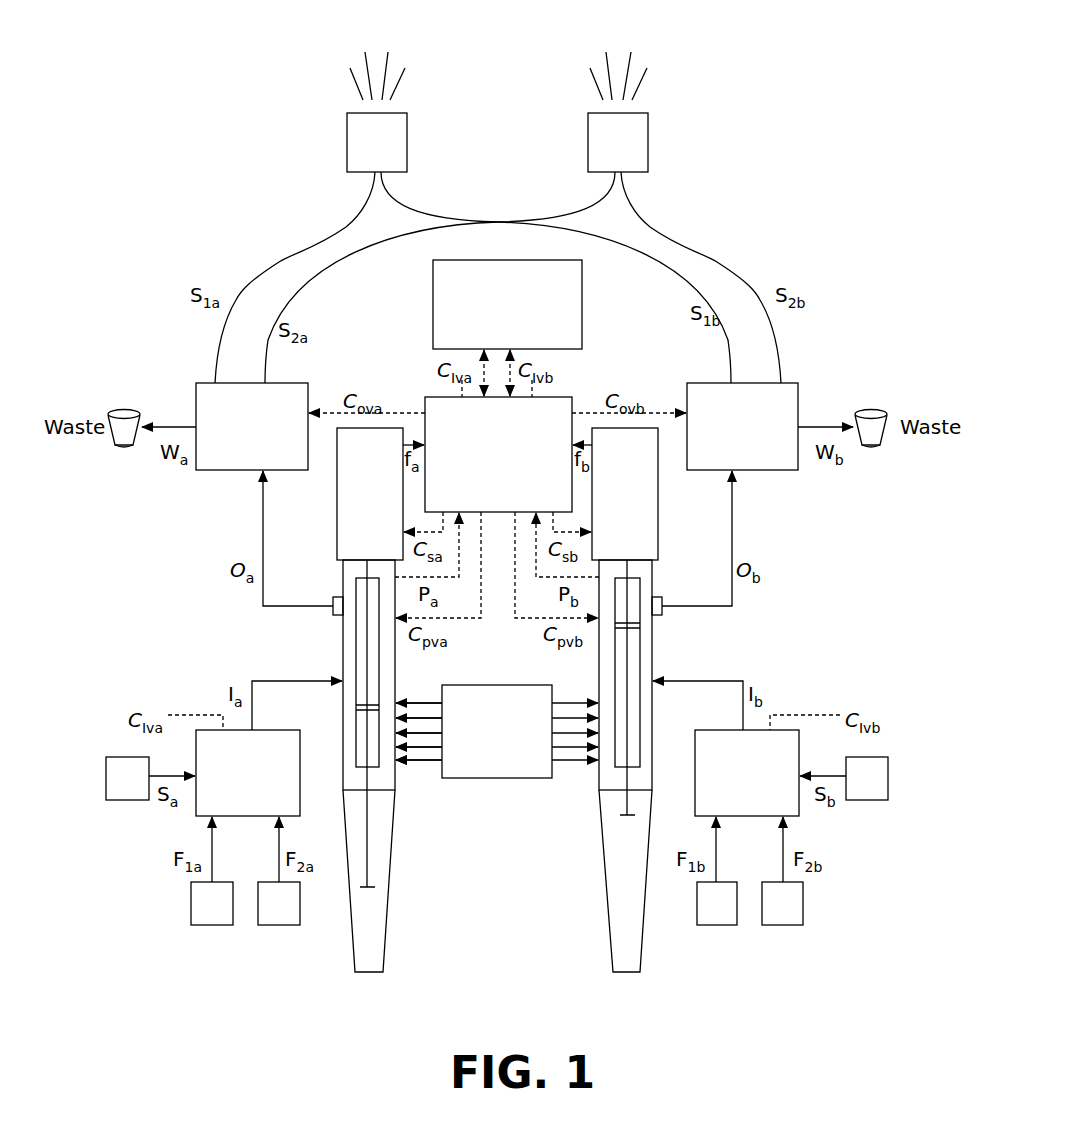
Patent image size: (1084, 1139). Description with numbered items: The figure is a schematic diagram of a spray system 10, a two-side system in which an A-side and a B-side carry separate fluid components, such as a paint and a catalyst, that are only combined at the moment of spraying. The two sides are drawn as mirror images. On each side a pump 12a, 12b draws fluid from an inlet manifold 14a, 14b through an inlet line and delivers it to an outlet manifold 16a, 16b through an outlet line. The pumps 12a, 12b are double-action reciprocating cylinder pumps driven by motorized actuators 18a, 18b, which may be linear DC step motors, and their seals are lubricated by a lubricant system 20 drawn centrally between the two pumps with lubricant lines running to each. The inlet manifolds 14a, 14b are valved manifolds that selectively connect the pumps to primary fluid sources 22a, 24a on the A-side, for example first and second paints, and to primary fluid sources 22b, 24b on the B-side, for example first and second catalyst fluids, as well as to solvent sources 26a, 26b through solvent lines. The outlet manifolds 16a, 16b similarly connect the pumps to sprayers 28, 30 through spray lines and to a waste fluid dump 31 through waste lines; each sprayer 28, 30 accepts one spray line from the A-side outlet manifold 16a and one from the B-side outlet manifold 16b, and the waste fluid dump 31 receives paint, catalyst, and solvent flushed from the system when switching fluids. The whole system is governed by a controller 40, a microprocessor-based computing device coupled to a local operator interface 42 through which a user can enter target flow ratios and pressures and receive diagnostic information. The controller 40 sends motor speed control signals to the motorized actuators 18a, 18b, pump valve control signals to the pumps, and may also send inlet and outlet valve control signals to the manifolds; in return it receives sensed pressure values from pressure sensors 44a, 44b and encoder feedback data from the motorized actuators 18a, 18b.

The spray system 10 is at (712, 92).
The pump 12a is at (393, 766).
The pump 12b is at (641, 766).
The inlet manifold 14a is at (288, 730).
The inlet manifold 14b is at (706, 730).
The outlet manifold 16a is at (205, 470).
The outlet manifold 16b is at (787, 470).
The motorized actuator 18a is at (337, 515).
The motorized actuator 18b is at (658, 515).
The lubricant system 20 is at (485, 778).
The primary fluid source 22a is at (206, 925).
The primary fluid source 22b is at (719, 925).
The primary fluid source 24a is at (275, 925).
The primary fluid source 24b is at (787, 925).
The solvent source 26a is at (120, 800).
The solvent source 26b is at (872, 800).
The sprayer 28 is at (347, 134).
The sprayer 30 is at (648, 138).
The waste fluid dump 31 is at (90, 452).
The controller 40 is at (430, 397).
The local operator interface 42 is at (582, 308).
The pressure sensor 44a is at (336, 616).
The pressure sensor 44b is at (658, 596).